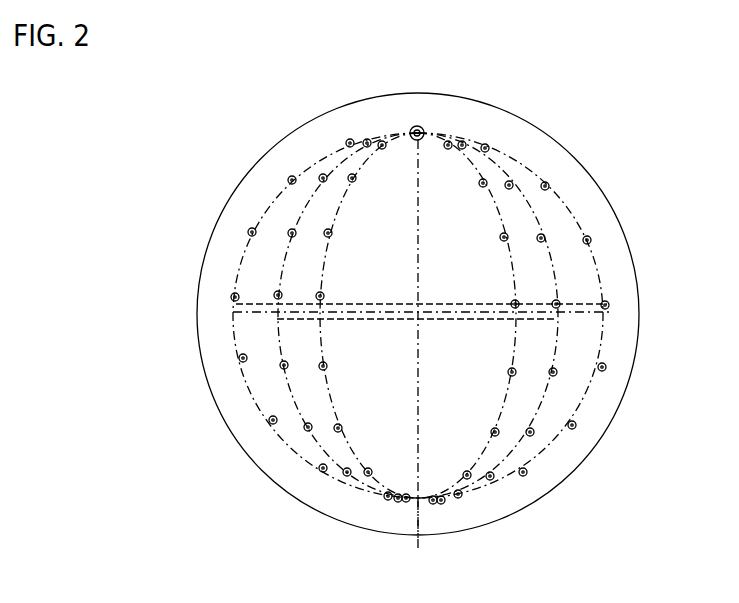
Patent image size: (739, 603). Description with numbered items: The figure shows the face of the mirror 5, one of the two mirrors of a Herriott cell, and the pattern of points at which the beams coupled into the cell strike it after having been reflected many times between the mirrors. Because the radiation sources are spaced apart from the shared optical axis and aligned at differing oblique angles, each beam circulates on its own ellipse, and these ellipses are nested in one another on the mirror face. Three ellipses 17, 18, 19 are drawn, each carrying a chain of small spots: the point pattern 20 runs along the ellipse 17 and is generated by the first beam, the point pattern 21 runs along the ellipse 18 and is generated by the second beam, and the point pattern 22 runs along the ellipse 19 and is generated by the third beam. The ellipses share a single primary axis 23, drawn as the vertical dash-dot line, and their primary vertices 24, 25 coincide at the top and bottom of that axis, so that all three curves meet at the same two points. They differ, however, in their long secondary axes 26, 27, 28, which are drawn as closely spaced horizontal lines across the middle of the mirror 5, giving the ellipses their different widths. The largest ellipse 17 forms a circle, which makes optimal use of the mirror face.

The mirror 5 is at (581, 113).
The ellipse 17 is at (582, 222).
The ellipse 18 is at (555, 279).
The ellipse 19 is at (513, 275).
The point pattern 20 is at (612, 372).
The point pattern 21 is at (565, 383).
The point pattern 22 is at (500, 376).
The primary axis 23 is at (416, 207).
The primary vertex 24 is at (417, 126).
The primary vertex 25 is at (418, 538).
The secondary axis 26 is at (361, 320).
The secondary axis 27 is at (444, 313).
The secondary axis 28 is at (370, 304).